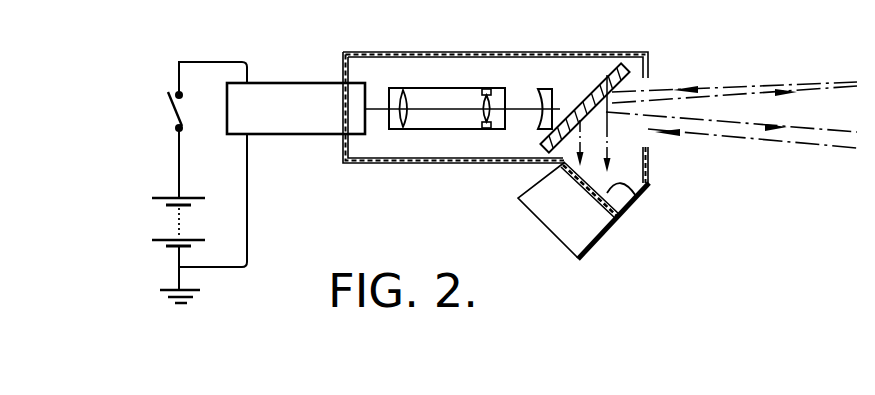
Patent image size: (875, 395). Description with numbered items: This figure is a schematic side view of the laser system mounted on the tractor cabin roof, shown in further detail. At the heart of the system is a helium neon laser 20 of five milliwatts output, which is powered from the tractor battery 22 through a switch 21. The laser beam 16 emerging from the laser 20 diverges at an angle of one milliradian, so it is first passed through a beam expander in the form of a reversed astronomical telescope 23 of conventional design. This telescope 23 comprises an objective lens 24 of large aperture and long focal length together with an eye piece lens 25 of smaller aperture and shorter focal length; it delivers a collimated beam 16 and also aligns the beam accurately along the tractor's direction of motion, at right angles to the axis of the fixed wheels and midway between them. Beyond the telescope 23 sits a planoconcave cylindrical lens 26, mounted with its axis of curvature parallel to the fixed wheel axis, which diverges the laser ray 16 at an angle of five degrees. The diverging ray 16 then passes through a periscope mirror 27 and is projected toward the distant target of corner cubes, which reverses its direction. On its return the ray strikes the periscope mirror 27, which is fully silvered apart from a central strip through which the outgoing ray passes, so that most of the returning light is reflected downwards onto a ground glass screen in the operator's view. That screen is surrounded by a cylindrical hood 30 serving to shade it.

The laser beam 16 is at (741, 86).
The helium neon laser 20 is at (298, 83).
The switch 21 is at (167, 107).
The tractor battery 22 is at (160, 215).
The reversed astronomical telescope 23 is at (418, 88).
The objective lens 24 is at (411, 125).
The eye piece lens 25 is at (487, 88).
The planoconcave cylindrical lens 26 is at (537, 125).
The periscope mirror 27 is at (609, 80).
The cylindrical hood 30 is at (600, 235).